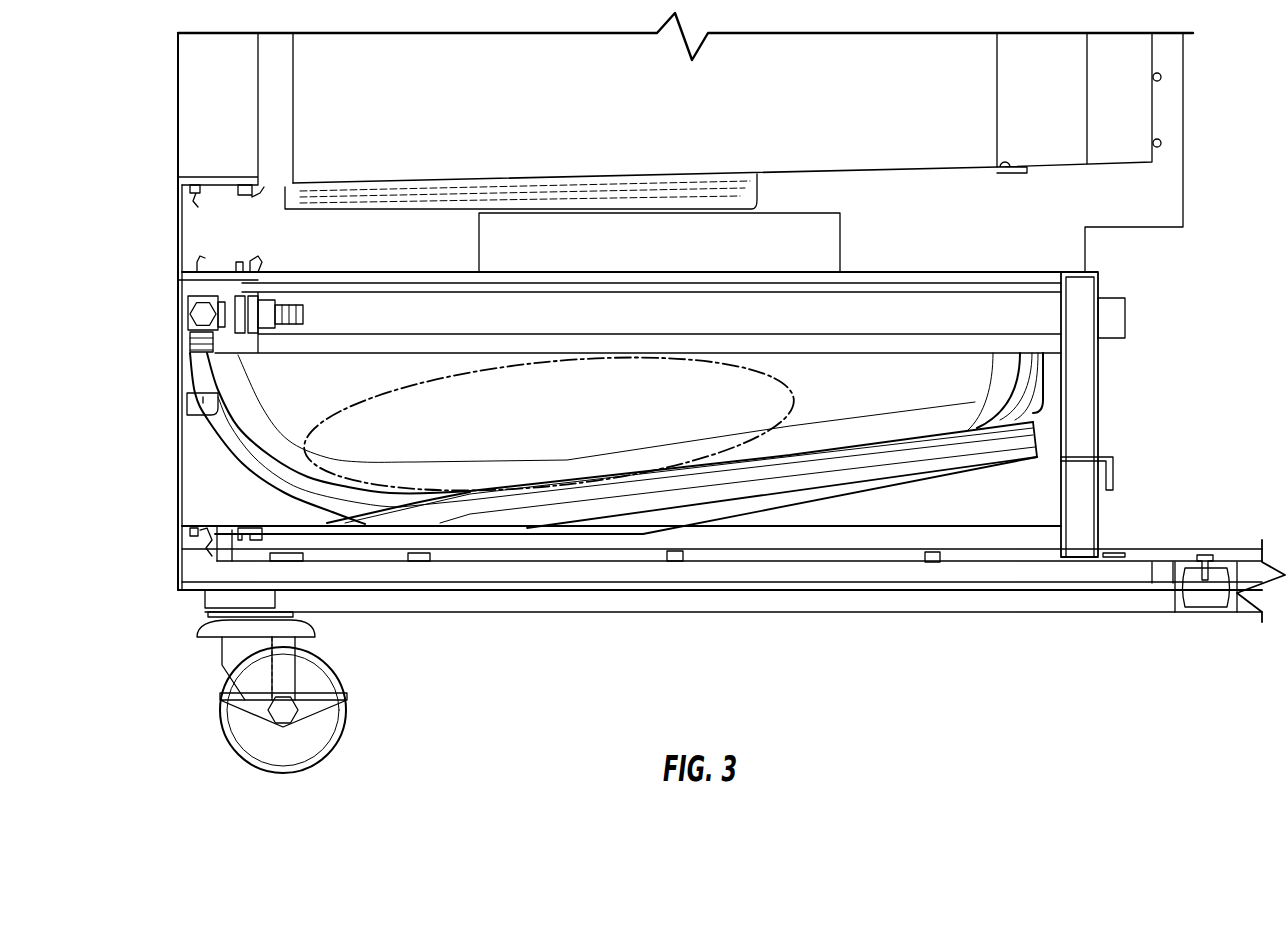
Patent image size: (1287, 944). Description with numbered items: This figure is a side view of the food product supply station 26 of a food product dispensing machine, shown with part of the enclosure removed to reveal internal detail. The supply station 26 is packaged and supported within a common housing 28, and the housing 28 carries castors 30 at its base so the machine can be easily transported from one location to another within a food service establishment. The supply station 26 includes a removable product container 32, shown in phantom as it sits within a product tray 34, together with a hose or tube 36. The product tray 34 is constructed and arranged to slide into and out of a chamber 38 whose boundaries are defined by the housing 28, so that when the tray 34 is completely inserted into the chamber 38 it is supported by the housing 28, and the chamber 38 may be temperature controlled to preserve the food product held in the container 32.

The food product supply station 26 is at (1069, 360).
The housing 28 is at (535, 575).
The castors 30 is at (347, 718).
The removable product container 32 is at (800, 396).
The product tray 34 is at (203, 374).
The hose or tube 36 is at (243, 440).
The chamber 38 is at (977, 525).